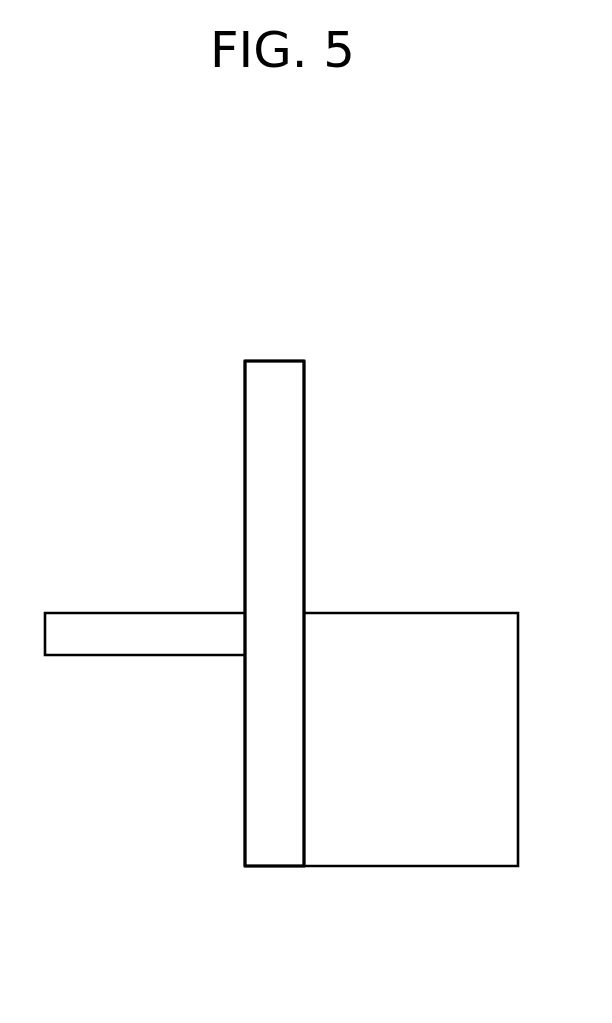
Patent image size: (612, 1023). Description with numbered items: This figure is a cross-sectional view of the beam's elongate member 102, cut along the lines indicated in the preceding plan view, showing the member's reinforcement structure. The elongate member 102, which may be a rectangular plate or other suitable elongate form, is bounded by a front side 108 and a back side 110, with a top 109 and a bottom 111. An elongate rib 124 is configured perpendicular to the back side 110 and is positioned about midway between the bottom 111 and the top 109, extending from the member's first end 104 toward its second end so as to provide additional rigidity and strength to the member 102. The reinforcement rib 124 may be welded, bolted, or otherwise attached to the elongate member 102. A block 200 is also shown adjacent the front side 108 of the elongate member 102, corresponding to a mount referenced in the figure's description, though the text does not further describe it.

The elongate member 102 is at (208, 252).
The first end 104 is at (274, 437).
The front side 108 is at (304, 397).
The top 109 is at (274, 360).
The back side 110 is at (243, 502).
The bottom 111 is at (280, 868).
The elongate rib 124 is at (104, 613).
The block 200 is at (414, 613).